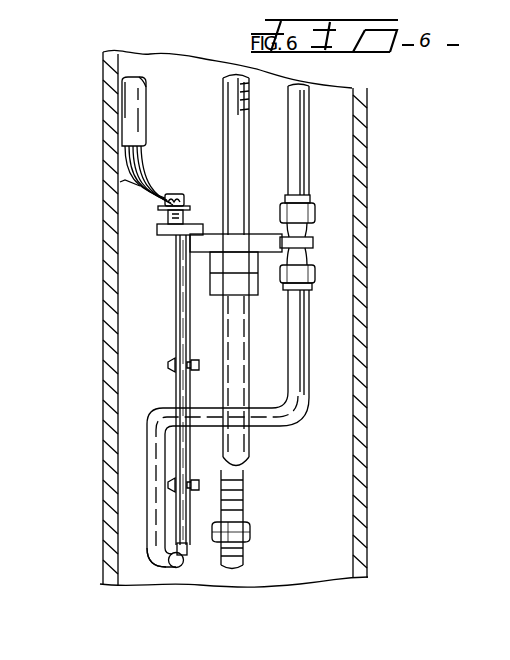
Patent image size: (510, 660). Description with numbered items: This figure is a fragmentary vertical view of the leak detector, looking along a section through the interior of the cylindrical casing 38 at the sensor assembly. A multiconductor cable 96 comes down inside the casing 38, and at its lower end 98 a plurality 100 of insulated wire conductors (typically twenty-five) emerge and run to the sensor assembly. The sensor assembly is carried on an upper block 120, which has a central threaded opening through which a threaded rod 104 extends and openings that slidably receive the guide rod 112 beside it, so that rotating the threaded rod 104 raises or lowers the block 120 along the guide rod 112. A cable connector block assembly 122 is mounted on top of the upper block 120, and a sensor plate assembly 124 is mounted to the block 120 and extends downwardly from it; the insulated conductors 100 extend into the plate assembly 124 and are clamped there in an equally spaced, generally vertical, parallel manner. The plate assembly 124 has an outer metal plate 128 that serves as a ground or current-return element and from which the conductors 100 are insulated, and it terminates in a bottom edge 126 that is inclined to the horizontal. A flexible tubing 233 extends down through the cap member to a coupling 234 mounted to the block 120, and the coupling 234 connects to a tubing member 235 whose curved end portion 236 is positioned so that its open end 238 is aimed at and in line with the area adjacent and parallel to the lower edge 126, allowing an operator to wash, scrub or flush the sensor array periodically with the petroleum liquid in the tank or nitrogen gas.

The cylindrical casing 38 is at (104, 71).
The multiconductor cable 96 is at (128, 100).
The lower end of the multiconductor cable 98 is at (130, 140).
The plurality of insulated wire conductors 100 is at (119, 184).
The threaded rod 104 is at (223, 92).
The guide rod 112 is at (282, 350).
The upper block 120 is at (190, 240).
The cable connector block assembly 122 is at (190, 158).
The sensor plate assembly 124 is at (176, 398).
The bottom edge 126 is at (188, 553).
The outer metal plate 128 is at (176, 322).
The tubing 233 is at (304, 134).
The coupling 234 is at (308, 232).
The tubing member 235 is at (278, 412).
The curved end portion 236 is at (160, 563).
The open end 238 is at (190, 562).